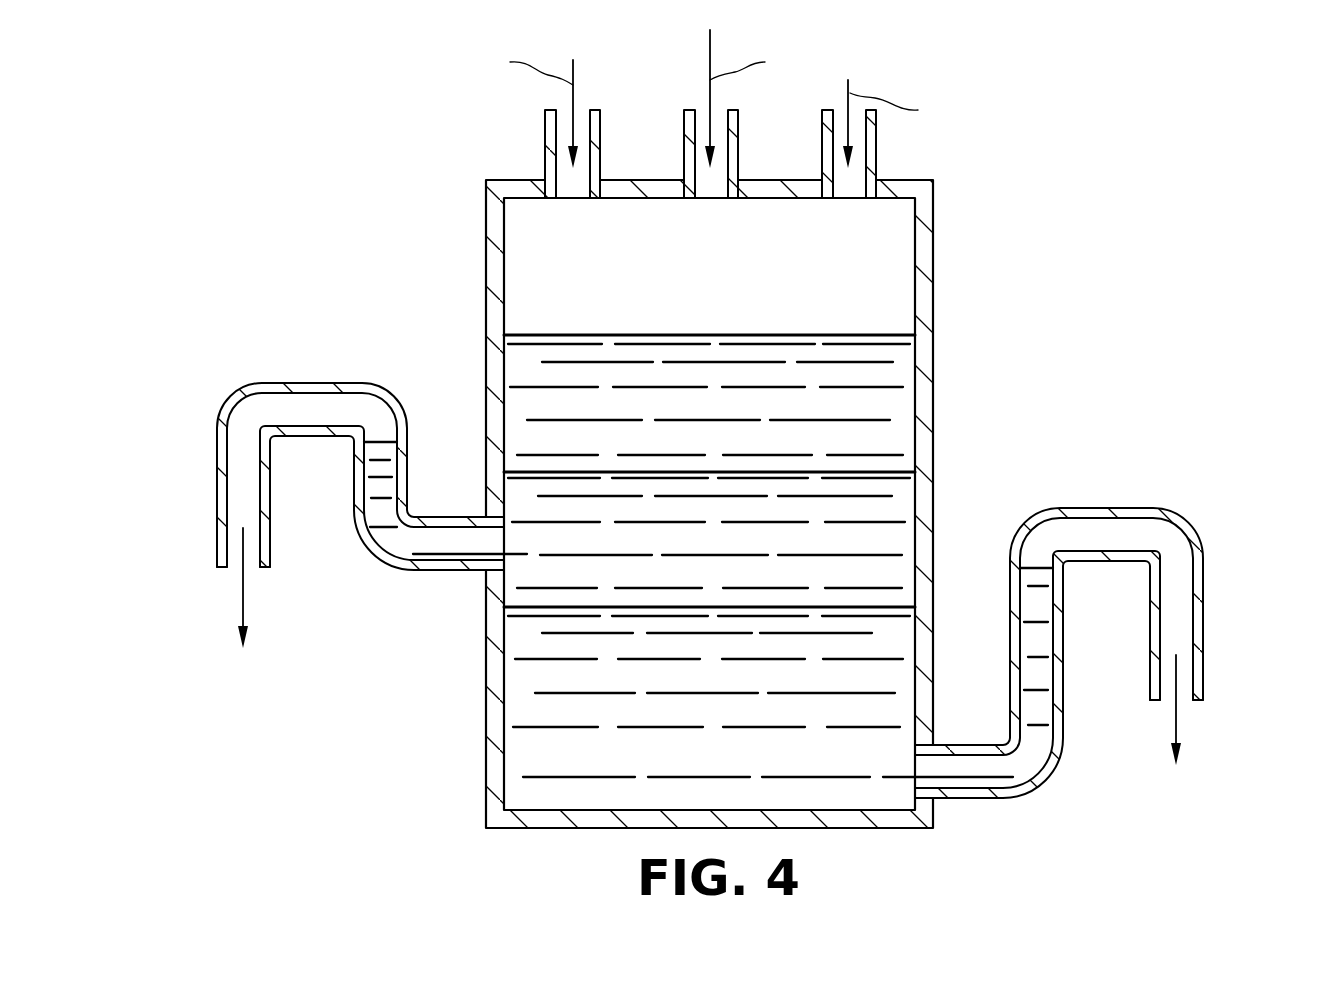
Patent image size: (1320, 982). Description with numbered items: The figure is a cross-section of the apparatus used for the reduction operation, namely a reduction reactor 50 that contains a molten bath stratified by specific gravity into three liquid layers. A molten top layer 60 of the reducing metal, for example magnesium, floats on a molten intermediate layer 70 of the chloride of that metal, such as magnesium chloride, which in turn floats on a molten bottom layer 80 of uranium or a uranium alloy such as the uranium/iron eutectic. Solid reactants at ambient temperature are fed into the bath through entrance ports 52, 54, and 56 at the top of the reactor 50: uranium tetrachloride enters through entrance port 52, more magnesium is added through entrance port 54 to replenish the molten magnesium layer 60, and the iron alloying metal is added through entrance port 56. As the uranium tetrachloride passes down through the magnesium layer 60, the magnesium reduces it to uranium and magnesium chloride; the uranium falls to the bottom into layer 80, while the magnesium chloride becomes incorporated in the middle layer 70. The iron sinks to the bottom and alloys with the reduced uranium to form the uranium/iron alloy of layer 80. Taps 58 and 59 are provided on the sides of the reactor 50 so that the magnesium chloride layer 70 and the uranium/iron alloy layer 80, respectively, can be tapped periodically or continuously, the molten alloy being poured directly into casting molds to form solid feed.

The reduction reactor 50 is at (933, 270).
The entrance port 52 is at (545, 148).
The entrance port 54 is at (685, 143).
The entrance port 56 is at (823, 152).
The tap 58 is at (217, 477).
The tap 59 is at (1205, 593).
The molten top layer 60 is at (532, 378).
The molten intermediate layer 70 is at (873, 538).
The molten bottom layer 80 is at (540, 752).